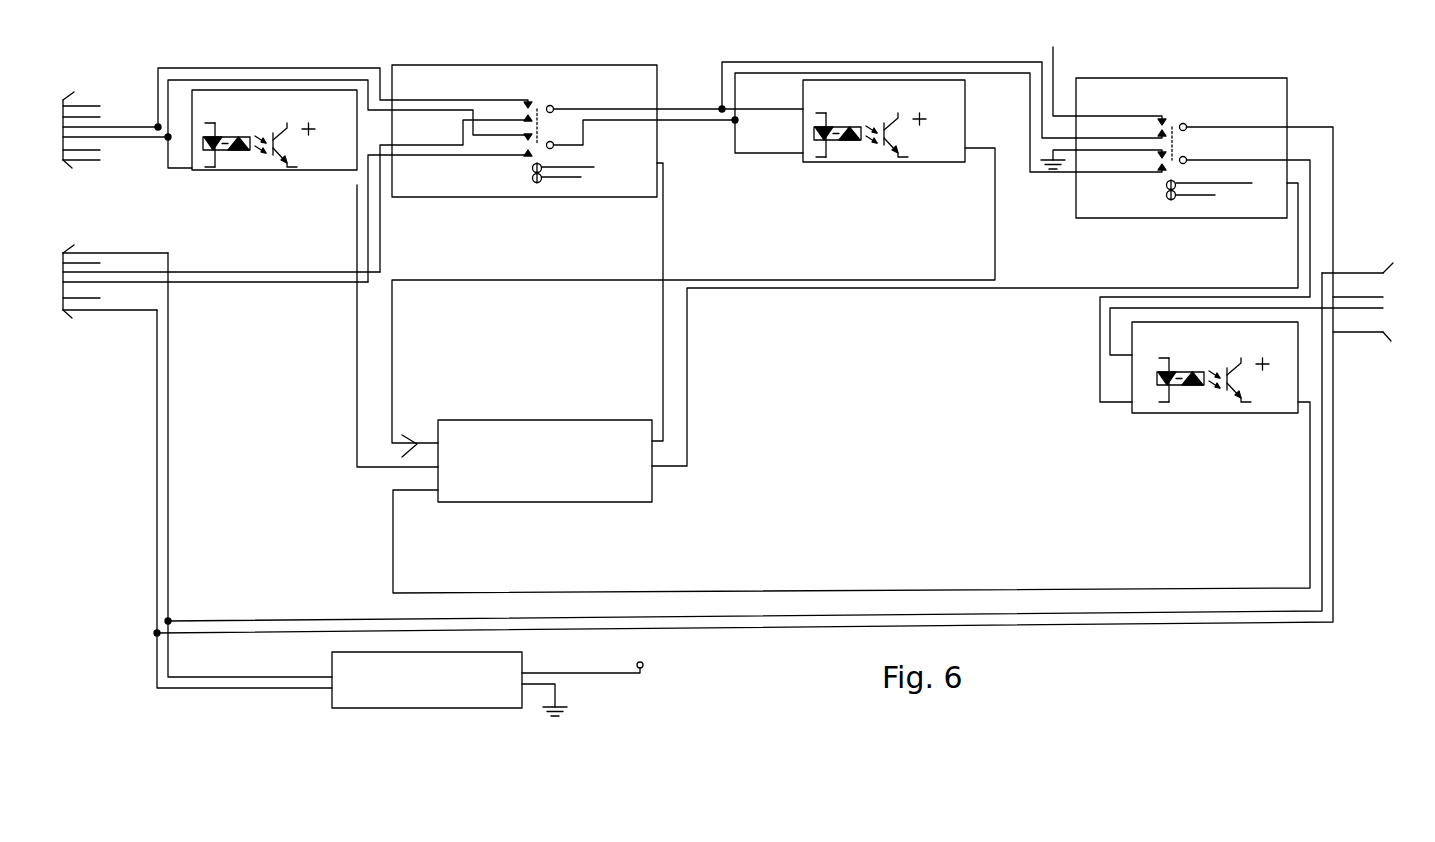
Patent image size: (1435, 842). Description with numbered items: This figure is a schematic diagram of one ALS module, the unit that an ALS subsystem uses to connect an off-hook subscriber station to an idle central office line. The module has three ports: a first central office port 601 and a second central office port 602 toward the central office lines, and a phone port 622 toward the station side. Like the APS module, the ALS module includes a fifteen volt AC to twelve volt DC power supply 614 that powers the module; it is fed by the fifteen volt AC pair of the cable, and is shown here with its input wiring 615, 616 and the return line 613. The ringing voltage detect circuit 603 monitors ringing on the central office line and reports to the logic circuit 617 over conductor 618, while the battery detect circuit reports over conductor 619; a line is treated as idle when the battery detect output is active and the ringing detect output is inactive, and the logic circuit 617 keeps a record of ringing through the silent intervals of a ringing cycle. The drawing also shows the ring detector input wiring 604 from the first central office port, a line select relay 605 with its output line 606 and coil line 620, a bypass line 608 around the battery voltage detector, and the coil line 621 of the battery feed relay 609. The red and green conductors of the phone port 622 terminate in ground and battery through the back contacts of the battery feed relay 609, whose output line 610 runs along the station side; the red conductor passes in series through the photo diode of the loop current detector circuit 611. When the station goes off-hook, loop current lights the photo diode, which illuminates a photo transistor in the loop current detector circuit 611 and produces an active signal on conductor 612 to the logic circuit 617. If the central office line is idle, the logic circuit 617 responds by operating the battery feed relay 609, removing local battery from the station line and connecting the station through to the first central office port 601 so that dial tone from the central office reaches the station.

The CO0 port 601 is at (75, 185).
The CO1 port 602 is at (74, 333).
The ringing voltage detect circuit 603 is at (226, 172).
The ring detector input wiring 604 is at (262, 66).
The line select relay 605 is at (492, 62).
The line select relay output line 606 is at (664, 107).
The battery voltage detector bypass line 608 is at (1028, 118).
The battery feed relay 609 is at (1158, 75).
The battery feed relay output line 610 is at (1335, 172).
The loop current detector circuit 611 is at (1168, 415).
The conductor 612 is at (910, 585).
The return line 613 is at (273, 619).
The power supply 614 is at (390, 709).
The power supply input line 615 is at (153, 677).
The power supply input line 616 is at (174, 410).
The logic circuit 617 is at (840, 163).
The conductor 618 is at (355, 332).
The conductor 619 is at (818, 278).
The line select relay coil line 620 is at (664, 359).
The battery feed relay coil line 621 is at (688, 382).
The phone port 622 is at (1343, 343).